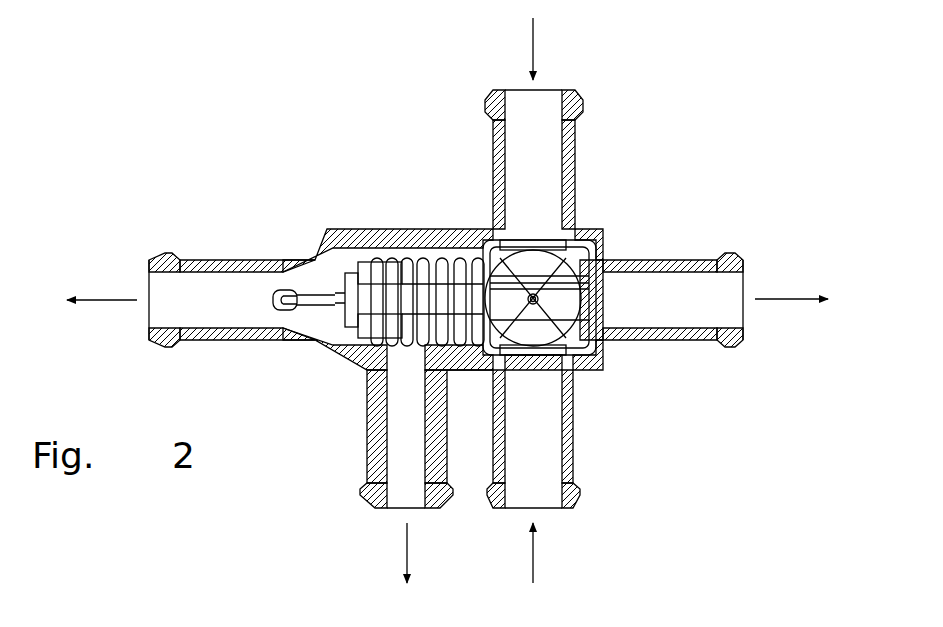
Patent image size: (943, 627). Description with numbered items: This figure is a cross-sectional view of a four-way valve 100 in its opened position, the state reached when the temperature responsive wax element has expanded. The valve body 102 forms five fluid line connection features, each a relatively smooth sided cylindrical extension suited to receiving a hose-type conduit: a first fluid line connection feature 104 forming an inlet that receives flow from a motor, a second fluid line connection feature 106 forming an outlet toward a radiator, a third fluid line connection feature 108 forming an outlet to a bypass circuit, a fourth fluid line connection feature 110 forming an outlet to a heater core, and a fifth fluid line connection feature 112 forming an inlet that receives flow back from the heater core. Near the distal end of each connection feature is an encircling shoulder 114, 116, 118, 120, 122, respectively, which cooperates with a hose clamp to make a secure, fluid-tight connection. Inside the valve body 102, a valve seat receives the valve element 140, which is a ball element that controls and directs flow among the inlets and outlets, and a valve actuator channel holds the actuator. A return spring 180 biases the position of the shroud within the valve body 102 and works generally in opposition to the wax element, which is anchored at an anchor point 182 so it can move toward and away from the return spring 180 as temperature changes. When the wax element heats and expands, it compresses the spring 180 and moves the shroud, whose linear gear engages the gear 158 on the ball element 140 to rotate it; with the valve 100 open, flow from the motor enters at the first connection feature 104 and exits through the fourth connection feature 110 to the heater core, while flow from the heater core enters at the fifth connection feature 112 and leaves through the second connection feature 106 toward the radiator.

The four-way valve 100 is at (372, 145).
The valve body 102 is at (424, 229).
The first fluid line connection feature 104 is at (575, 450).
The second fluid line connection feature 106 is at (229, 260).
The third fluid line connection feature 108 is at (366, 438).
The fourth fluid line connection feature 110 is at (650, 260).
The fifth fluid line connection feature 112 is at (578, 150).
The encircling shoulder 114 is at (582, 497).
The encircling shoulder 116 is at (156, 258).
The encircling shoulder 118 is at (362, 492).
The encircling shoulder 120 is at (732, 254).
The encircling shoulder 122 is at (583, 106).
The valve element 140 is at (462, 372).
The gear 158 is at (604, 364).
The return spring 180 is at (380, 258).
The anchor point 182 is at (273, 297).